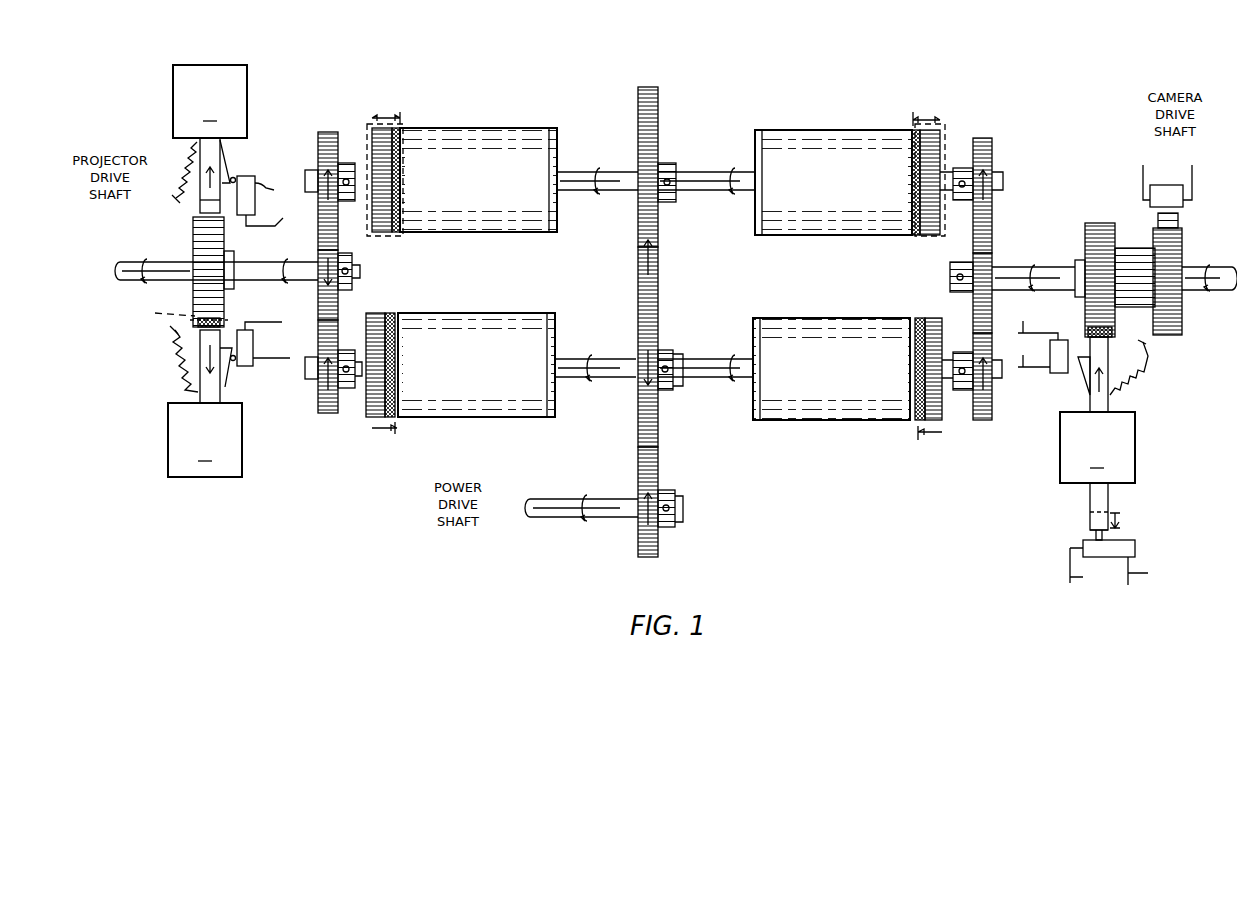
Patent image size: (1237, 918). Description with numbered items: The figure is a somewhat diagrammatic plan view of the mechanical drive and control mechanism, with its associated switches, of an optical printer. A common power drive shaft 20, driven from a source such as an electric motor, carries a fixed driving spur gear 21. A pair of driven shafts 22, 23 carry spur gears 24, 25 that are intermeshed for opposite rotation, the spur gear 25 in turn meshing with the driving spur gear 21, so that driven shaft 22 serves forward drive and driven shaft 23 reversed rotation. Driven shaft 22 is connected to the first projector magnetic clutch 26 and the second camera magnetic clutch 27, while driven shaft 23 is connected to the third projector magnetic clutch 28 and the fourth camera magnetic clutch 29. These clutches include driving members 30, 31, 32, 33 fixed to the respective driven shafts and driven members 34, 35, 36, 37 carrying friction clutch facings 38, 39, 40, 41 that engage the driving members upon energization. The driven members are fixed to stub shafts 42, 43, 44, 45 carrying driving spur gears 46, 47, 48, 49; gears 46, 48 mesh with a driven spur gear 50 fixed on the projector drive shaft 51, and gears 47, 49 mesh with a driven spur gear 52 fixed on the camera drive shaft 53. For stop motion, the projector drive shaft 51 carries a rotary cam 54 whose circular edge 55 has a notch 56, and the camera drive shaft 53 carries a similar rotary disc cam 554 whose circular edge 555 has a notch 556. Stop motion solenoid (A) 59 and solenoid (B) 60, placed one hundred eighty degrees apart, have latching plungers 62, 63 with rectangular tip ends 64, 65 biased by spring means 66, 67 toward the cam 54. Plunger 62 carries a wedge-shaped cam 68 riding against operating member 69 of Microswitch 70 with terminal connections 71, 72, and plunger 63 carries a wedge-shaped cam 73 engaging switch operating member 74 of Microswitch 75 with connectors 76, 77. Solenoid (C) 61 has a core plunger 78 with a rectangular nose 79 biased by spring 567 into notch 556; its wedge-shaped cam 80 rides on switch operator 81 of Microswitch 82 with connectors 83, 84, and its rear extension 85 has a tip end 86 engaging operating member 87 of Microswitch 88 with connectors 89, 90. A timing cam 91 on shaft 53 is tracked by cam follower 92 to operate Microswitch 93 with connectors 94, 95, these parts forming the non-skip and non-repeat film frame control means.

The power drive shaft 20 is at (519, 517).
The driving spur gear 21 is at (660, 478).
The driven shaft 22 is at (705, 165).
The driven shaft 23 is at (700, 351).
The spur gear 24 is at (660, 124).
The spur gear 25 is at (660, 300).
The projector magnetic clutch #1 26 is at (473, 124).
The camera magnetic clutch #2 27 is at (831, 126).
The projector magnetic clutch #3 28 is at (476, 310).
The camera magnetic clutch #4 29 is at (840, 314).
The clutch driving member 30 is at (540, 130).
The clutch driving member 31 is at (772, 130).
The clutch driving member 32 is at (530, 314).
The clutch driving member 33 is at (770, 318).
The clutch driven member 34 is at (375, 128).
The clutch driven member 35 is at (935, 130).
The clutch driven member 36 is at (378, 313).
The clutch driven member 37 is at (932, 318).
The friction clutch facing 38 is at (396, 232).
The friction clutch facing 39 is at (915, 235).
The friction clutch facing 40 is at (392, 312).
The friction clutch facing 41 is at (918, 318).
The stub shaft 42 is at (318, 170).
The stub shaft 43 is at (1000, 172).
The stub shaft 44 is at (310, 378).
The stub shaft 45 is at (1000, 378).
The driving spur gear 46 is at (332, 138).
The driving spur gear 47 is at (990, 138).
The driving spur gear 48 is at (322, 412).
The driving spur gear 49 is at (990, 412).
The driven spur gear 50 is at (340, 250).
The projector drive shaft 51 is at (140, 252).
The driven spur gear 52 is at (993, 248).
The camera drive shaft 53 is at (1199, 259).
The rotary cam 54 is at (236, 247).
The circular edge 55 is at (200, 296).
The notch 56 is at (163, 313).
The stop motion solenoid (A) 59 is at (258, 70).
The stop motion solenoid (B) 60 is at (253, 467).
The solenoid (C) 61 is at (1141, 494).
The latching plunger 62 is at (218, 160).
The latching plunger 63 is at (205, 388).
The tip end 64 is at (205, 208).
The tip end 65 is at (222, 324).
The spring means 66 is at (190, 156).
The spring means 67 is at (180, 360).
The wedge-shaped cam 68 is at (226, 162).
The operating member 69 is at (236, 178).
The Microswitch 70 is at (256, 178).
The terminal connection 71 is at (278, 190).
The terminal connection 72 is at (275, 214).
The wedge-shaped cam 73 is at (232, 375).
The switch operating member 74 is at (236, 356).
The Microswitch 75 is at (248, 368).
The circuit terminal connector 76 is at (271, 314).
The circuit terminal connector 77 is at (280, 342).
The core plunger 78 is at (1108, 405).
The rectangular nose 79 is at (1129, 363).
The wedge-shaped cam 80 is at (1084, 380).
The switch operator 81 is at (1076, 368).
The Microswitch 82 is at (1063, 333).
The terminal connector 83 is at (1022, 318).
The terminal connector 84 is at (1032, 352).
The rear extension 85 is at (1090, 500).
The tip end 86 is at (1090, 527).
The operating member 87 is at (1095, 535).
The Microswitch 88 is at (1135, 540).
The circuit terminal connector 89 is at (1087, 571).
The circuit terminal connector 90 is at (1148, 571).
The timing cam 91 is at (1174, 341).
The cam follower 92 is at (1158, 218).
The Microswitch 93 is at (1162, 177).
The circuit terminal connector 94 is at (1143, 178).
The circuit terminal connector 95 is at (1192, 180).
The rotary disc cam 554 is at (1096, 214).
The circular edge 555 is at (1090, 240).
The notch 556 is at (1113, 332).
The spring 567 is at (1146, 375).